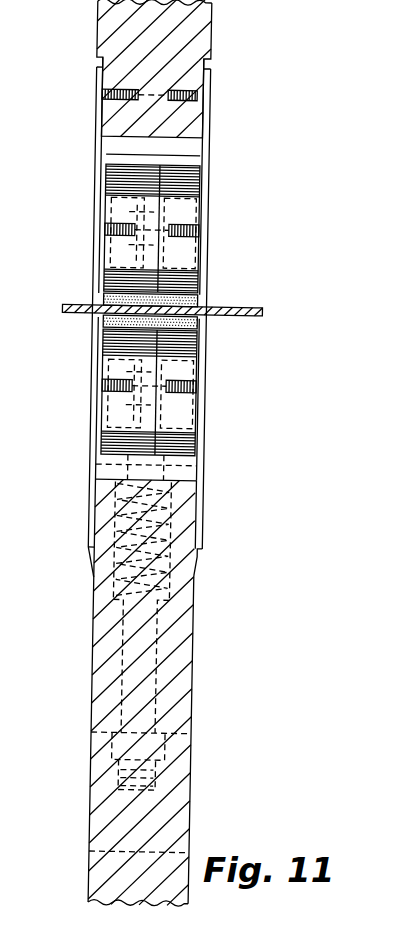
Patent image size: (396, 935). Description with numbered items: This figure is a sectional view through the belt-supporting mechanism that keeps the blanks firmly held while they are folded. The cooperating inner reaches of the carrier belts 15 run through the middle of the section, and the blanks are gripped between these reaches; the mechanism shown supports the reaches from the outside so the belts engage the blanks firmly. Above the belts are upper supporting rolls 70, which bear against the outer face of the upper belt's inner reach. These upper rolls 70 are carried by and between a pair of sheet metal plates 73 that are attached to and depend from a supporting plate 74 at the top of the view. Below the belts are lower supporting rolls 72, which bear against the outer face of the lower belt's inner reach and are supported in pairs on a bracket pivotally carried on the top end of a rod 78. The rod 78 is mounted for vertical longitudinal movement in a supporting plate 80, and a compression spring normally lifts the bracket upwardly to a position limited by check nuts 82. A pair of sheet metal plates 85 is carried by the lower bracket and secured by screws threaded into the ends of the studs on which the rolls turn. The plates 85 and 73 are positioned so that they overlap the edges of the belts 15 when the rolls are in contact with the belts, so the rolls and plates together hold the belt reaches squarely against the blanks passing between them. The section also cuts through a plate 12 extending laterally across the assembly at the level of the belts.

The supporting plate 74 is at (108, 36).
The sheet metal plates 73 is at (97, 152).
The upper supporting rolls 70 is at (117, 207).
The plate 12 is at (78, 307).
The carrier belts 15 is at (205, 308).
The lower supporting rolls 72 is at (100, 366).
The sheet metal plates 85 is at (88, 487).
The rod 78 is at (123, 653).
The supporting plate 80 is at (185, 678).
The check nuts 82 is at (113, 763).